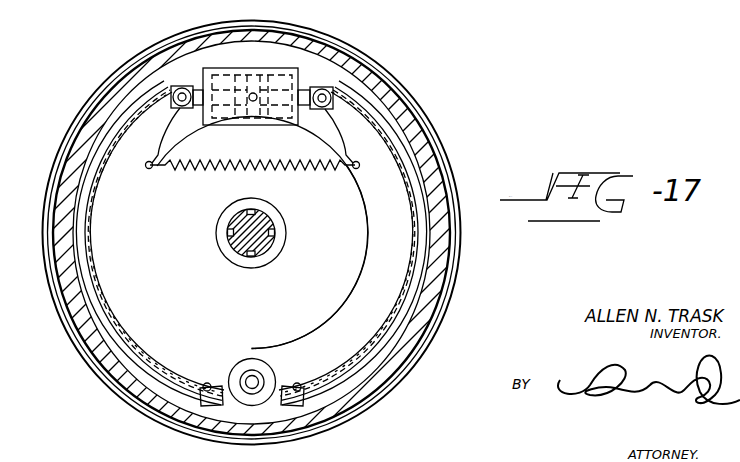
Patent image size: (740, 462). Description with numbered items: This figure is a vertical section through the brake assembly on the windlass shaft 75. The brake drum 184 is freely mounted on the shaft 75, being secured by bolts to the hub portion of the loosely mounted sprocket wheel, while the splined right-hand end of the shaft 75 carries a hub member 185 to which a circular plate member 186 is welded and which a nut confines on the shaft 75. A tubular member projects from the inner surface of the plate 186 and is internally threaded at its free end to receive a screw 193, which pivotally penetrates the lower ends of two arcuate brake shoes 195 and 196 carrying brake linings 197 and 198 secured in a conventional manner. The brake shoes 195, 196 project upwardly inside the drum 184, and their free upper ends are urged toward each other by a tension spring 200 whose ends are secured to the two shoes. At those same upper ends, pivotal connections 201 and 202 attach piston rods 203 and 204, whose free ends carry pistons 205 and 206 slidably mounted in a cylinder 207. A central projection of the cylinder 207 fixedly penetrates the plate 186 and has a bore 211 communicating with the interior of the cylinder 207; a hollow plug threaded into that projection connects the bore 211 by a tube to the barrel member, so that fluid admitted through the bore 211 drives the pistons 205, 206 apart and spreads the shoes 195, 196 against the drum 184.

The shaft 75 is at (272, 222).
The brake drum 184 is at (379, 95).
The hub member 185 is at (286, 247).
The circular plate member 186 is at (418, 108).
The screw 193 is at (264, 383).
The brake shoe 195 is at (153, 298).
The brake shoe 196 is at (343, 309).
The brake lining 197 is at (92, 194).
The brake lining 198 is at (407, 232).
The tension spring 200 is at (228, 176).
The pivotal connection 201 is at (177, 112).
The pivotal connection 202 is at (324, 108).
The piston rod 203 is at (305, 112).
The piston rod 204 is at (196, 112).
The piston 205 is at (265, 125).
The piston 206 is at (243, 122).
The cylinder 207 is at (253, 125).
The bore 211 is at (253, 93).